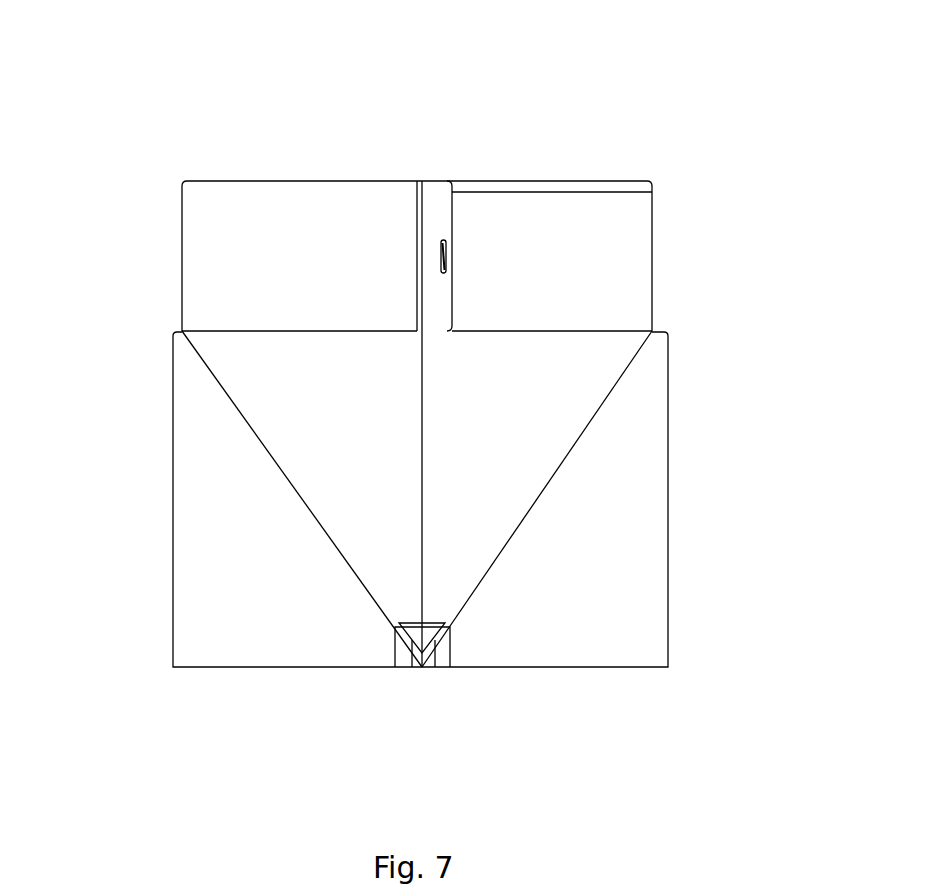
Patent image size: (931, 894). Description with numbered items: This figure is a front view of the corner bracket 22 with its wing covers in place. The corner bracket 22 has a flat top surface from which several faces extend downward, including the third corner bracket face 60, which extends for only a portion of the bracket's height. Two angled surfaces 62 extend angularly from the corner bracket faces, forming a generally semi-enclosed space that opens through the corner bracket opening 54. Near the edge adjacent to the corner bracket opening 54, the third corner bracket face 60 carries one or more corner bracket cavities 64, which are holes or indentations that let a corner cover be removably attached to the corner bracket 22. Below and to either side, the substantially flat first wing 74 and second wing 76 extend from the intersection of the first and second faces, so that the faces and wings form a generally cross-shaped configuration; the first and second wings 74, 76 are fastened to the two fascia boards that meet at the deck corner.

The corner bracket 22 is at (480, 126).
The corner bracket opening 54 is at (278, 260).
The third corner bracket face 60 is at (610, 250).
The angled surfaces 62 is at (333, 415).
The corner bracket cavities 64 is at (443, 240).
The first wing 74 is at (220, 598).
The second wing 76 is at (622, 577).